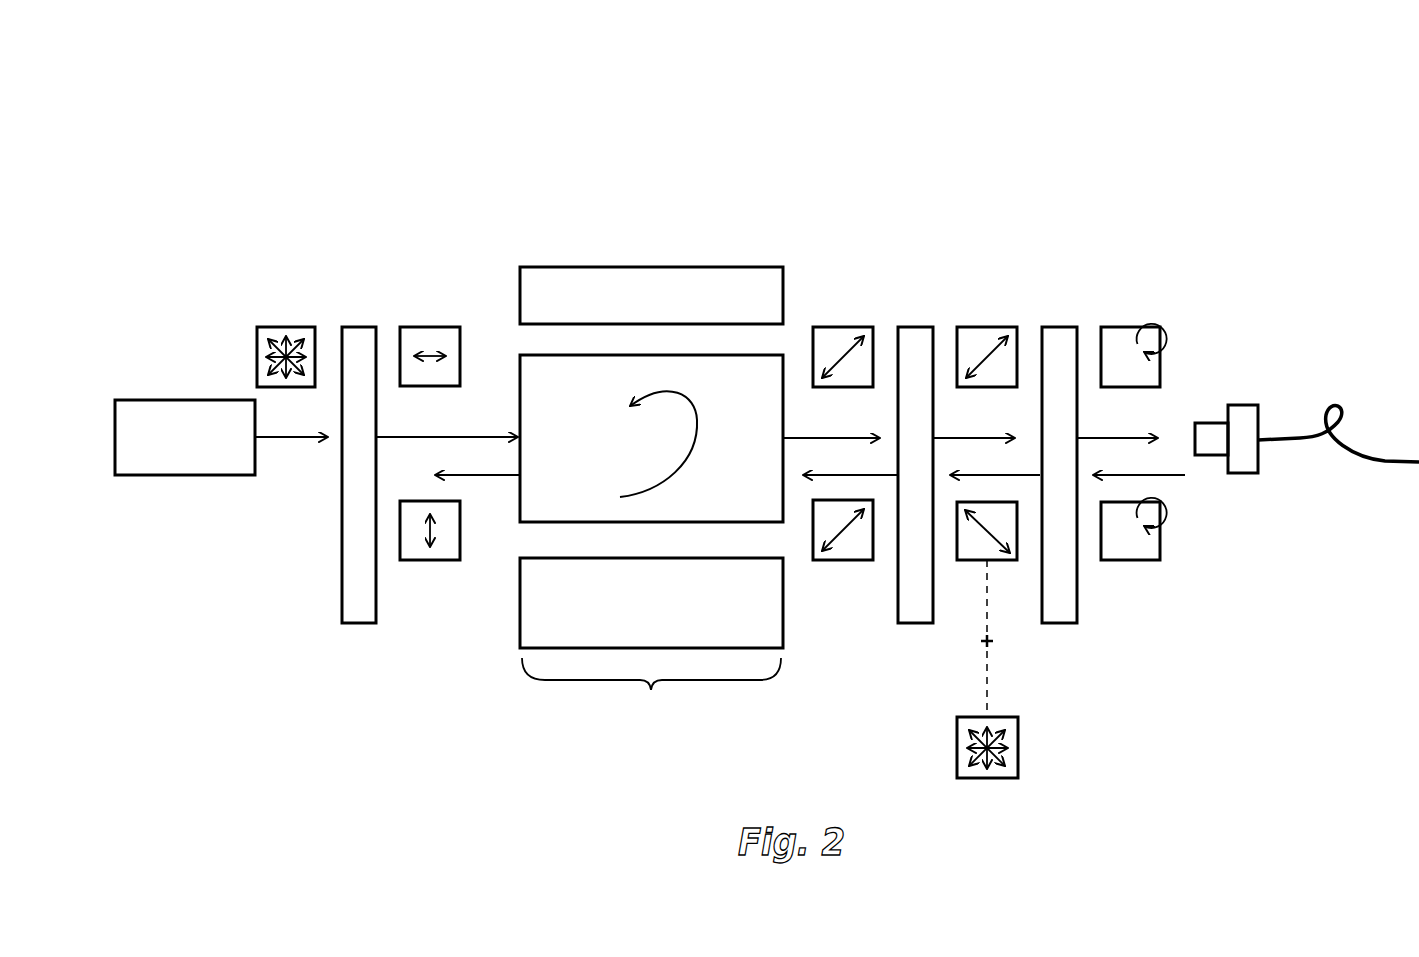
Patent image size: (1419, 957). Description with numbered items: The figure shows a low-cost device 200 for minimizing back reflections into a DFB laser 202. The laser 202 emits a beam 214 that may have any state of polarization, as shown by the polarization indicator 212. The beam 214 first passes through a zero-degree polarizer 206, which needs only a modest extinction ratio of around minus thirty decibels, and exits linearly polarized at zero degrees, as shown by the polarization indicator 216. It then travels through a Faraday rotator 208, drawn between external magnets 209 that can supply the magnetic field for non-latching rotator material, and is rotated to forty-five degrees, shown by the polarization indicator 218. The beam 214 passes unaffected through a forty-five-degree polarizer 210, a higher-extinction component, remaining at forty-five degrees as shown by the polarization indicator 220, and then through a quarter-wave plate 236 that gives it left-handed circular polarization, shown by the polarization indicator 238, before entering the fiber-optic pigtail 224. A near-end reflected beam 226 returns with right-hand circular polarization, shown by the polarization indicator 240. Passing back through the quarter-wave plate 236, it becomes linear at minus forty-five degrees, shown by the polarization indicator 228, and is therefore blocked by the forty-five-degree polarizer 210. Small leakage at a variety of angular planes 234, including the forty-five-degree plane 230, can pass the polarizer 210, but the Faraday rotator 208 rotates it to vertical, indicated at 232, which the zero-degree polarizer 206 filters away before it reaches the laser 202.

The optical measurement system 200 is at (246, 181).
The DFB laser 202 is at (172, 477).
The 0° polarizer 206 is at (353, 625).
The Faraday rotator 208 is at (651, 536).
The magnets 209 is at (676, 275).
The 45° polarizer 210 is at (912, 625).
The polarization indicator 212 is at (272, 310).
The beam 214 is at (303, 440).
The polarization indicator 216 is at (428, 327).
The polarization indicator 218 is at (840, 327).
The 45 degree polarization state indicator after second polarizer 220 is at (993, 310).
The fiber-optic pigtail 224 is at (1257, 453).
The reflected beam 226 is at (1175, 477).
The polarization indicator 228 is at (1017, 540).
The 45° plane 230 is at (840, 560).
The vertical polarization state indicator 232 is at (427, 562).
The angular planes 234 is at (983, 778).
The quarter-wave plate 236 is at (1062, 625).
The polarization indicator 238 is at (1127, 327).
The polarization indicator 240 is at (1128, 562).